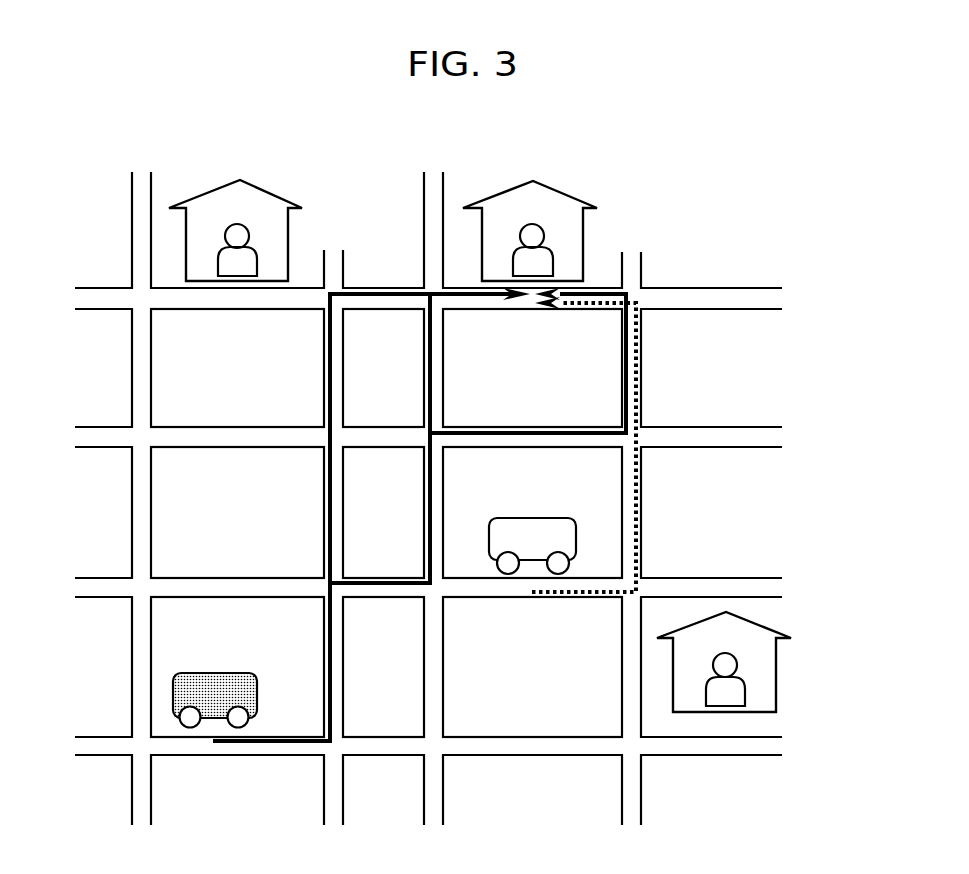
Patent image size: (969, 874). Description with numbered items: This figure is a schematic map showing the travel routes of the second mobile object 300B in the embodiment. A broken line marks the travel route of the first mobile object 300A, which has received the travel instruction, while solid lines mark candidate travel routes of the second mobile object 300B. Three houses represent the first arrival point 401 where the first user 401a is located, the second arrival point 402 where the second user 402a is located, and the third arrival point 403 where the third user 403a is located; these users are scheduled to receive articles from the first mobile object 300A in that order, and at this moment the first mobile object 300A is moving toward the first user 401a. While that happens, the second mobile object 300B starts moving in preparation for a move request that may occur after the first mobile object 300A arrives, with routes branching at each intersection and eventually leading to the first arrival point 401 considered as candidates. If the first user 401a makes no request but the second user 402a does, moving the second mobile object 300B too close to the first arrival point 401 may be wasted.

The first mobile object 300A is at (562, 500).
The second mobile object 300B is at (243, 653).
The first arrival point 401 is at (567, 192).
The first user 401a is at (552, 248).
The second arrival point 402 is at (757, 623).
The second user 402a is at (740, 677).
The third arrival point 403 is at (270, 193).
The third user 403a is at (253, 248).